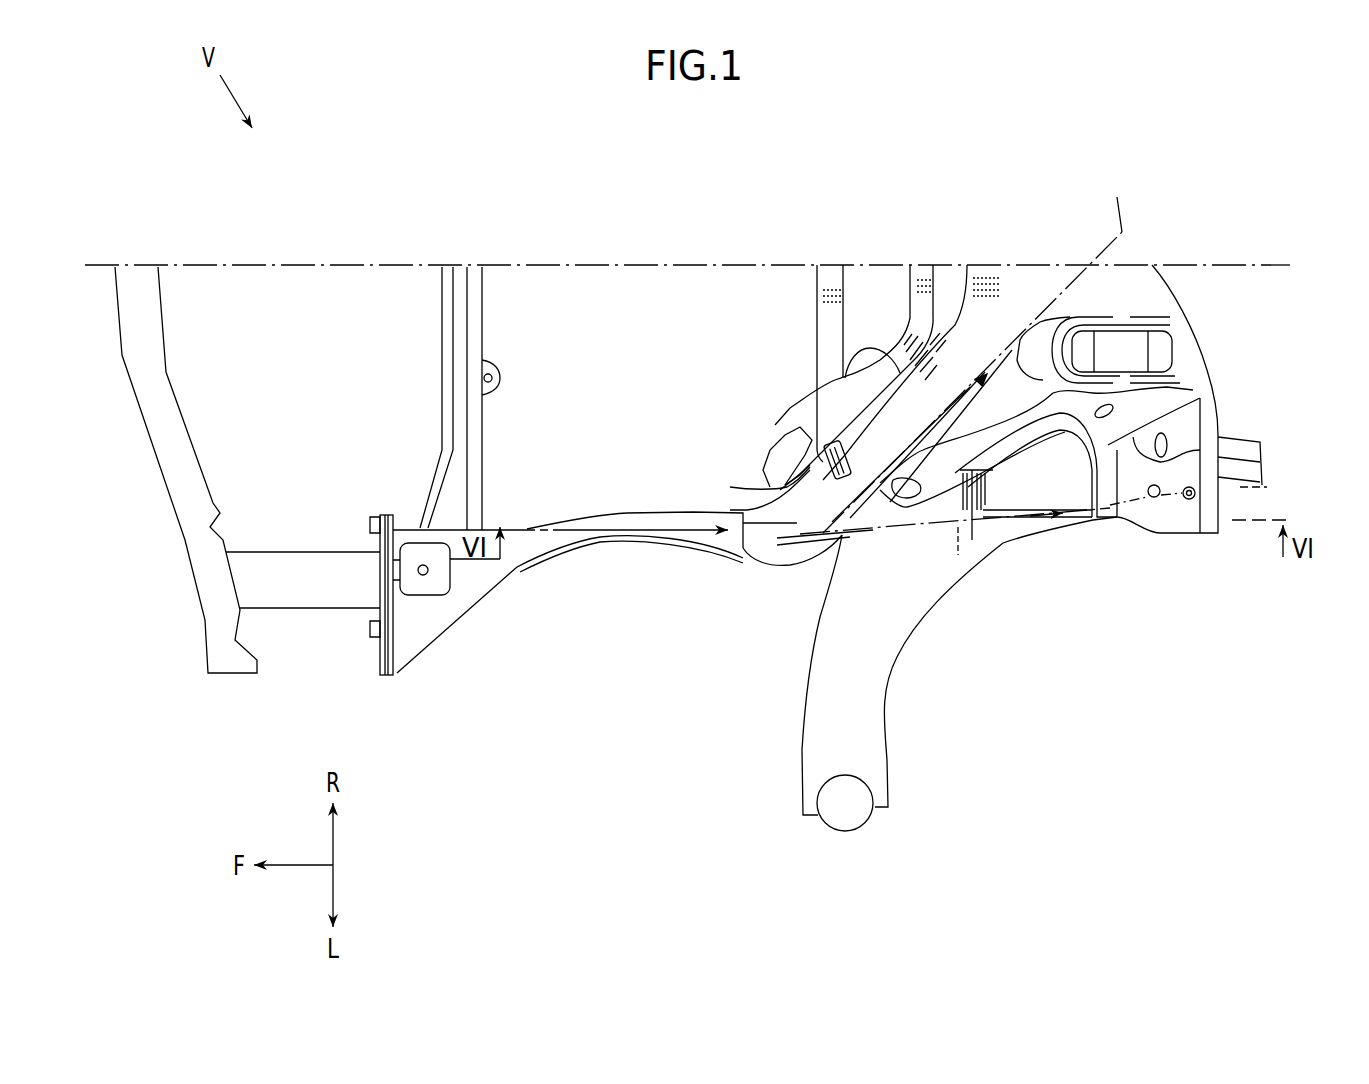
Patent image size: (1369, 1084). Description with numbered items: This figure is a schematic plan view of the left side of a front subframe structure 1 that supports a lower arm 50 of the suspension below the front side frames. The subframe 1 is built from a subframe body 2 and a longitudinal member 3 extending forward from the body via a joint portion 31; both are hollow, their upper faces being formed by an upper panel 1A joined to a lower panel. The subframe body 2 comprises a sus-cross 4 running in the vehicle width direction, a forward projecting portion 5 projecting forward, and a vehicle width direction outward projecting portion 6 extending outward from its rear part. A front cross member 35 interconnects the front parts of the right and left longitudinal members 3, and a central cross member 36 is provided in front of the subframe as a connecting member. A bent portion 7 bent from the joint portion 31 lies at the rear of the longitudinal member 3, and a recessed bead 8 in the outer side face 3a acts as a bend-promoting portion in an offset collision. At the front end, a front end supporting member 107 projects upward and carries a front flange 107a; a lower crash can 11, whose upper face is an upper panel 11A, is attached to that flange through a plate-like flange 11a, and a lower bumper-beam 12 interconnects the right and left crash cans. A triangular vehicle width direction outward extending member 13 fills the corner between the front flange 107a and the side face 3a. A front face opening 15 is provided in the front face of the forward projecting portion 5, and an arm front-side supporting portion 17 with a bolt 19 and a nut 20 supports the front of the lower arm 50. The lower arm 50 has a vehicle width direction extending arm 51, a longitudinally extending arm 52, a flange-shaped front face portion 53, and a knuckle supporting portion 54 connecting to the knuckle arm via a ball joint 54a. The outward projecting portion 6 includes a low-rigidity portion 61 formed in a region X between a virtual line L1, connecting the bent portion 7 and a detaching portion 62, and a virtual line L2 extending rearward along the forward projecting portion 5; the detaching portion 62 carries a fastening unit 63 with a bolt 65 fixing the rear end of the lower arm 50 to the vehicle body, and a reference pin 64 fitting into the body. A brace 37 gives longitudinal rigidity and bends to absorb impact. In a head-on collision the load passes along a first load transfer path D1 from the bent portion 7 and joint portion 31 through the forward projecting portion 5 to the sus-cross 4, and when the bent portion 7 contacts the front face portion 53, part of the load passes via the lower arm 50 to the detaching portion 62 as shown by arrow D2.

The front subframe structure 1 is at (570, 707).
The upper panel 1A is at (1040, 268).
The subframe body 2 is at (773, 328).
The longitudinal member 3 is at (630, 508).
The side face 3a is at (638, 543).
The sus-cross 4 is at (1183, 307).
The forward projecting portion 5 is at (815, 384).
The vehicle width direction outward projecting portion 6 is at (1223, 420).
The bent portion 7 is at (800, 567).
The recessed bead 8 is at (598, 546).
The lower crash can 11 is at (310, 613).
The upper panel 11A is at (297, 563).
The flange 11a is at (382, 645).
The lower bumper-beam 12 is at (168, 377).
The vehicle width direction outward extending member 13 is at (465, 618).
The front face opening 15 is at (775, 490).
The arm front-side supporting portion 17 is at (806, 462).
The bolt 19 is at (829, 447).
The nut 20 is at (986, 466).
The joint portion 31 is at (773, 458).
The front cross member 35 is at (442, 347).
The central cross member 36 is at (815, 285).
The brace 37 is at (1237, 497).
The lower arm 50 is at (908, 647).
The vehicle width direction extending arm 51 is at (883, 722).
The longitudinally extending arm 52 is at (1040, 545).
The front face portion 53 is at (820, 583).
The knuckle supporting portion 54 is at (857, 833).
The ball joint 54a is at (833, 833).
The low-rigidity portion 61 is at (1073, 430).
The detaching portion 62 is at (1113, 533).
The fastening unit 63 is at (1140, 513).
The reference pin 64 is at (1189, 499).
The bolt 65 is at (1154, 497).
The front end supporting member 107 is at (413, 527).
The front flange 107a is at (400, 652).
The first load transfer path D1 is at (950, 420).
The load transfer arrow D2 is at (997, 548).
The virtual line L1 is at (920, 527).
The virtual line L2 is at (980, 348).
The region X is at (1147, 403).